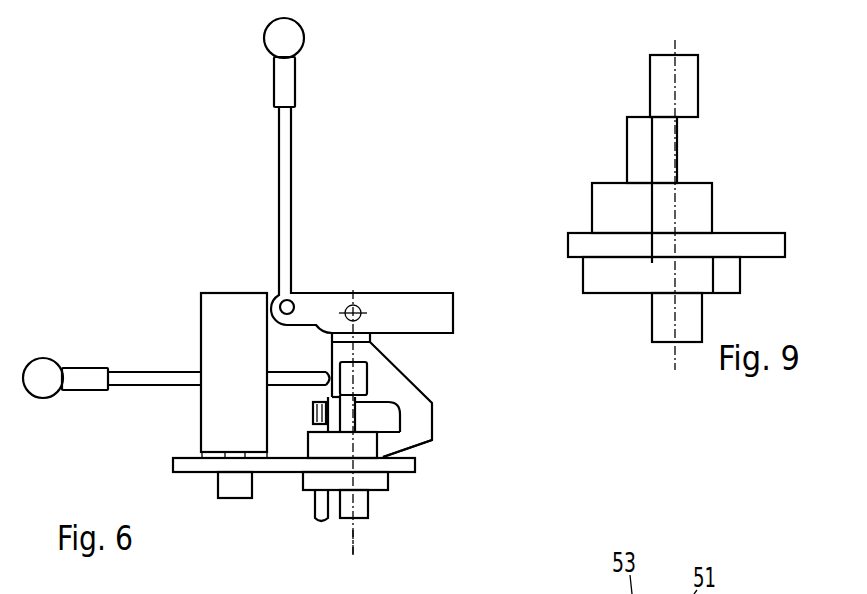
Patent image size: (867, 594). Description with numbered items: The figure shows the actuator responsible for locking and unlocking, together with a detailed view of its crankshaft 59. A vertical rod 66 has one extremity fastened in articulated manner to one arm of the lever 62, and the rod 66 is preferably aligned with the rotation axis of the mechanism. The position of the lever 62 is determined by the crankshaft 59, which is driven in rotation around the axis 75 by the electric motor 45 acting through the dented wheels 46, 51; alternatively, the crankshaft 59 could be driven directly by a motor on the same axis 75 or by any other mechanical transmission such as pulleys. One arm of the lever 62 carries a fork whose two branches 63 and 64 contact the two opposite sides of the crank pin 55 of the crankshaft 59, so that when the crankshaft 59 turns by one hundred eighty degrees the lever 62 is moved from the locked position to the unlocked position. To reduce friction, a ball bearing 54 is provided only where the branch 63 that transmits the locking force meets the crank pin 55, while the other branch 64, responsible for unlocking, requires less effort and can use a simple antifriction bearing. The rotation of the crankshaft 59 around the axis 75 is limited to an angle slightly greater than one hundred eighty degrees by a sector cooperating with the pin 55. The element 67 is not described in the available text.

In FIG. 6, the electric motor 45 is at (225, 315).
In FIG. 6, the dented wheel 46 is at (185, 465).
In FIG. 6, the dented wheel 51 is at (415, 470).
In FIG. 9, the dented wheel 51 is at (745, 243).
In FIG. 6, the ball bearing 54 is at (322, 447).
In FIG. 9, the ball bearing 54 is at (608, 200).
In FIG. 6, the crank pin 55 is at (350, 417).
In FIG. 9, the crank pin 55 is at (638, 147).
In FIG. 9, the crankshaft 59 is at (738, 128).
In FIG. 6, the lever 62 is at (395, 387).
In FIG. 6, the fork branch 63 is at (393, 442).
In FIG. 6, the fork branch 64 is at (316, 423).
In FIG. 6, the vertical rod 66 is at (287, 160).
In FIG. 6, the handle rod 67 is at (138, 375).
In FIG. 6, the axis 75 is at (357, 542).